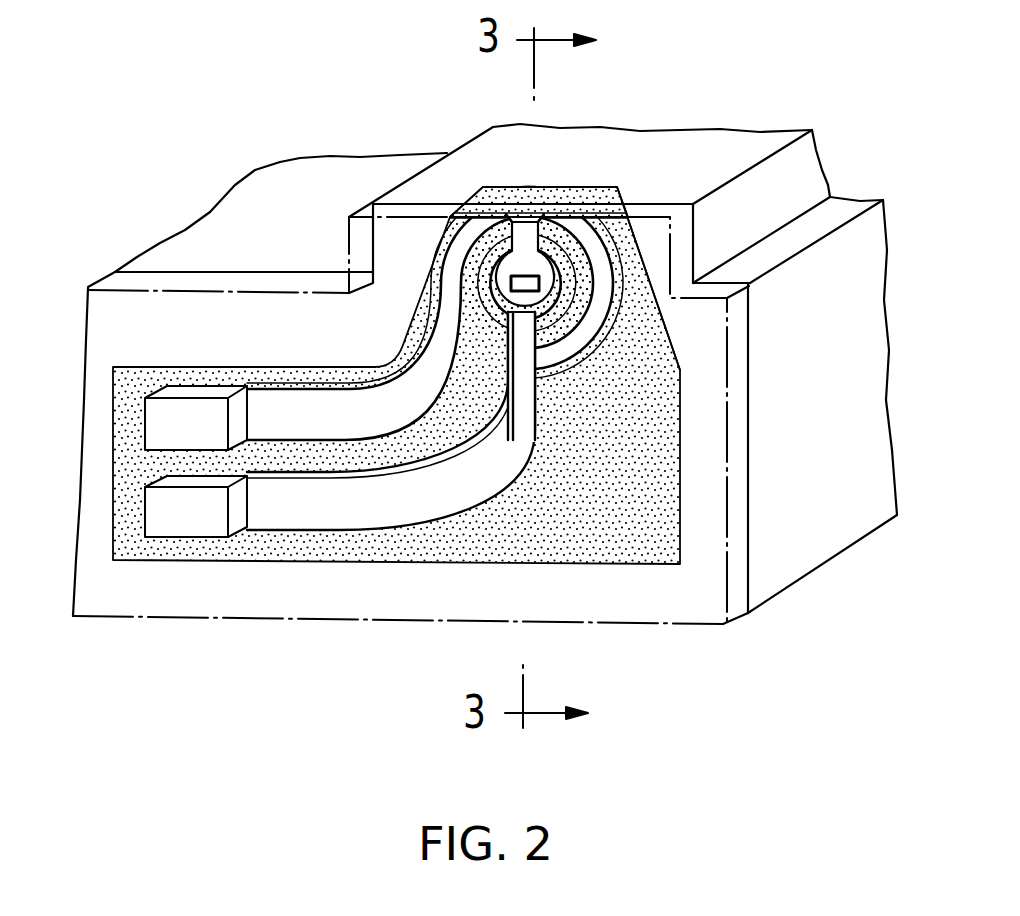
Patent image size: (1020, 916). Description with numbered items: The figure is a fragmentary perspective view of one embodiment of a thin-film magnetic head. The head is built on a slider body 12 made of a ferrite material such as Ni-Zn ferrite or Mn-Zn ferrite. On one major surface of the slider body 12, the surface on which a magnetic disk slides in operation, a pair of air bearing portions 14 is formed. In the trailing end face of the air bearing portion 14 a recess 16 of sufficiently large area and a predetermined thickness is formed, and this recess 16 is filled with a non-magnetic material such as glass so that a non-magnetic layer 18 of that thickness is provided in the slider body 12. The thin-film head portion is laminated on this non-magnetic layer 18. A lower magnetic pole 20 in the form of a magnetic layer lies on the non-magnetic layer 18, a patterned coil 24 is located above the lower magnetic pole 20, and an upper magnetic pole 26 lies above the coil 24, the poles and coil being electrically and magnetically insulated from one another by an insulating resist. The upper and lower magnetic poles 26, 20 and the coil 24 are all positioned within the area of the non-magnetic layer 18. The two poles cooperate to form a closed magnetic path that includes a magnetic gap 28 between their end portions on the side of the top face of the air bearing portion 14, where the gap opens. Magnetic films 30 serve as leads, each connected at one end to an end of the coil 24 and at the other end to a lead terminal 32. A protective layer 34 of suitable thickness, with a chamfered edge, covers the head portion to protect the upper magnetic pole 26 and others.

The slider body 12 is at (800, 533).
The air bearing portion 14 is at (722, 148).
The recess 16 is at (677, 517).
The non-magnetic layer 18 is at (582, 506).
The lower magnetic pole 20 is at (596, 212).
The coil 24 is at (450, 217).
The upper magnetic pole 26 is at (513, 213).
The magnetic gap 28 is at (535, 216).
The magnetic film 30 is at (288, 405).
The lead terminal 32 is at (190, 415).
The protective layer 34 is at (737, 603).